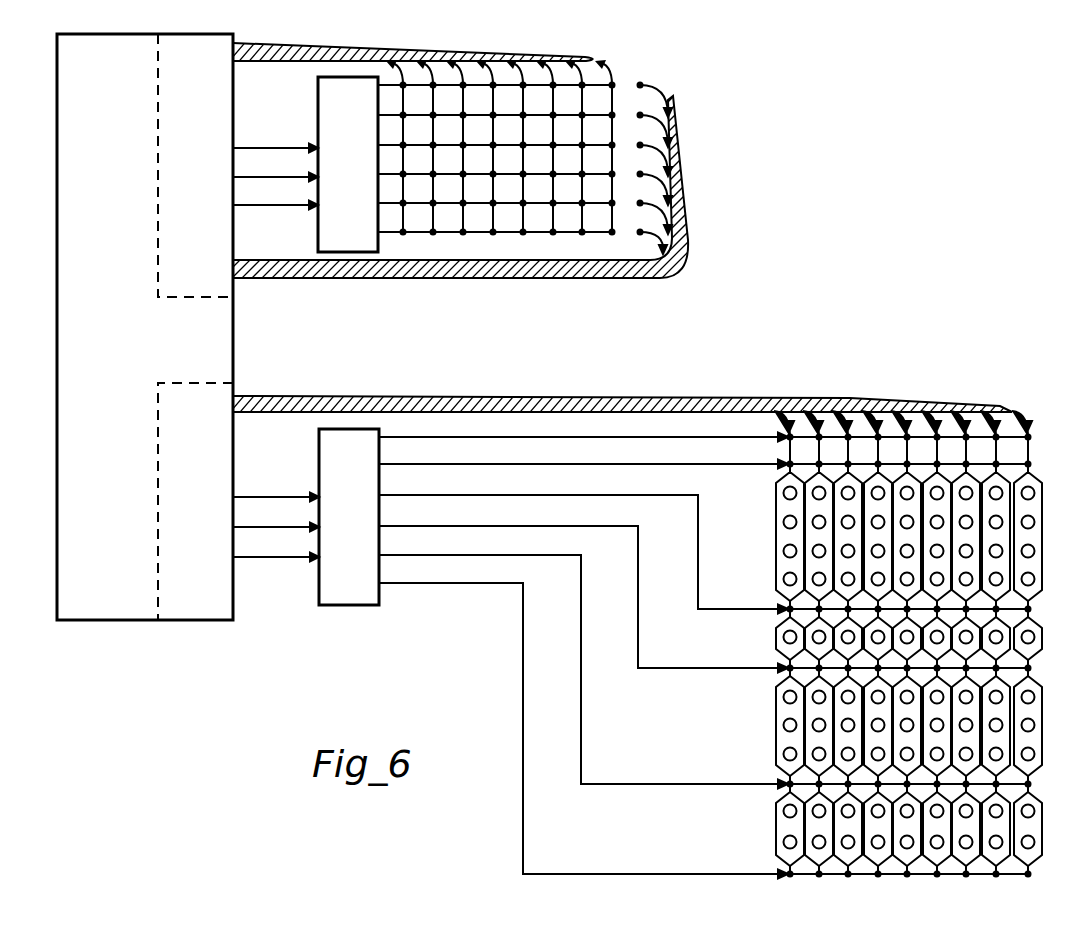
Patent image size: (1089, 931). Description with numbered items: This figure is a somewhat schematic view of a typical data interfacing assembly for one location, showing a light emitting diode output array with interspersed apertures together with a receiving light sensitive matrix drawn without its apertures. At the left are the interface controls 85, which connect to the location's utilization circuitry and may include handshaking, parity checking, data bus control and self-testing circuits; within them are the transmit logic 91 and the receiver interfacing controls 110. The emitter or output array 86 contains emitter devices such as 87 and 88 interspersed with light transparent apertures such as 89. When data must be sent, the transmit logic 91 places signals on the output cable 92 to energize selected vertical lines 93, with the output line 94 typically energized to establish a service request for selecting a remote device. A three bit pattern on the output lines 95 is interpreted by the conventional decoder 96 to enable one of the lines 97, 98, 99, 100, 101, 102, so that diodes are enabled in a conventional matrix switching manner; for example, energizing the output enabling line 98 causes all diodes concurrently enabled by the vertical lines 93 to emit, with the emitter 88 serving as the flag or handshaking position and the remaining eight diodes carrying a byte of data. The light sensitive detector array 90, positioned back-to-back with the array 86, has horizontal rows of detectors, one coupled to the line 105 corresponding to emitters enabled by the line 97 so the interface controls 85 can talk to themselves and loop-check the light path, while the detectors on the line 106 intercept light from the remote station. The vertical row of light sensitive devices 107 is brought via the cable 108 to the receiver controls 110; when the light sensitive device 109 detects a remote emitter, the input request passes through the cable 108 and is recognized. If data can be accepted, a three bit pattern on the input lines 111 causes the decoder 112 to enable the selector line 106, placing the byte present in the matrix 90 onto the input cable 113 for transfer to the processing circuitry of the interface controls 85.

The interface controls 85 is at (127, 620).
The emitter or output array 86 is at (1007, 405).
The emitter device 87 is at (1031, 438).
The emitter device 88 is at (1031, 465).
The light transparent aperture 89 is at (1032, 518).
The light sensitive detector array 90 is at (597, 50).
The transmit logic 91 is at (158, 487).
The output cable 92 is at (483, 396).
The vertical lines 93 is at (783, 426).
The output line 94 is at (1042, 588).
The output lines 95 is at (285, 575).
The decoder 96 is at (360, 606).
The enabling line 97 is at (462, 436).
The output enabling line 98 is at (462, 463).
The enabling line 99 is at (462, 494).
The enabling line 100 is at (465, 525).
The enabling line 101 is at (460, 554).
The enabling line 102 is at (466, 582).
The detector row line 105 is at (392, 84).
The selector line 106 is at (393, 112).
The vertical row of light sensitive devices 107 is at (643, 77).
The cable 108 is at (470, 279).
The light sensitive device 109 is at (645, 115).
The receiver interfacing controls 110 is at (157, 222).
The input lines 111 is at (305, 146).
The decoder 112 is at (318, 237).
The input cable 113 is at (358, 52).